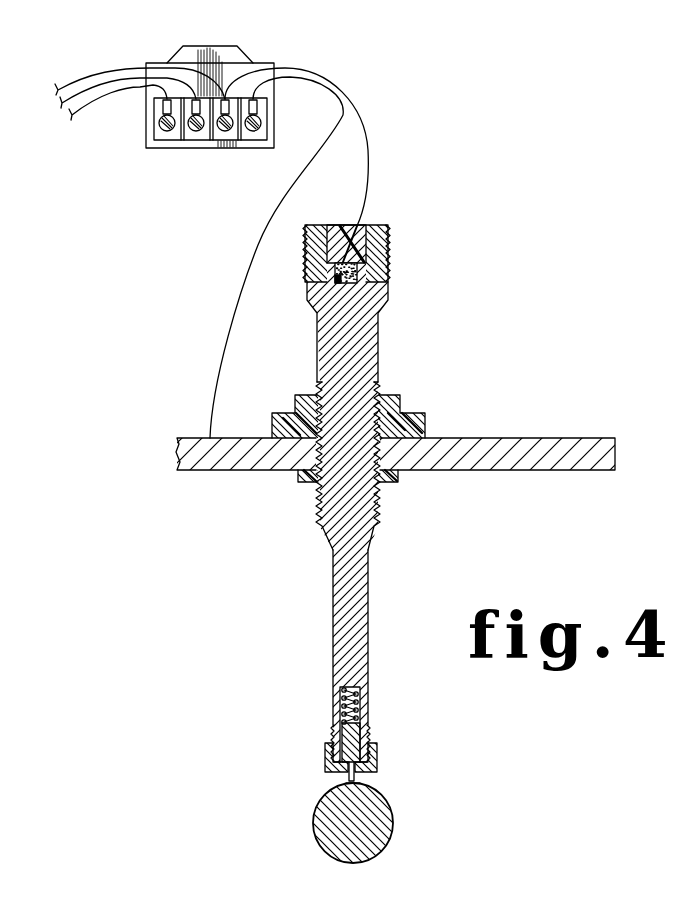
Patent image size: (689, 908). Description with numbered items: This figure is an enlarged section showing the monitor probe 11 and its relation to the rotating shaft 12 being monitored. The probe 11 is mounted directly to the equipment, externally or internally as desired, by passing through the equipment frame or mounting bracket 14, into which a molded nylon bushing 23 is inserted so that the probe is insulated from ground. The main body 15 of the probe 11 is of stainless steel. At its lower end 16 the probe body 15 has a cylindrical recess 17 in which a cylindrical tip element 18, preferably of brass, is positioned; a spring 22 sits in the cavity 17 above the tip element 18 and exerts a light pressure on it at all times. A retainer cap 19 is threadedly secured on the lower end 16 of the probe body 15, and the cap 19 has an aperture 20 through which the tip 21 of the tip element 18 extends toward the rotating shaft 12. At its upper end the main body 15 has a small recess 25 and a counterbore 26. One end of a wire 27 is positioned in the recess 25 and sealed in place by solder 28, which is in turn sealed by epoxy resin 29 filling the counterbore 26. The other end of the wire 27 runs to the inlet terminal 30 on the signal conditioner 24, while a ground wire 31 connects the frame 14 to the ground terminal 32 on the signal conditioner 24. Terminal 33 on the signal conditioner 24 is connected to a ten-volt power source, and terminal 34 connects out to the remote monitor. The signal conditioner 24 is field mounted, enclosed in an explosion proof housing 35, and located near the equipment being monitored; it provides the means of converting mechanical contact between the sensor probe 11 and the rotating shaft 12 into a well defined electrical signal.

The probe 11 is at (425, 351).
The rotating shaft 12 is at (333, 831).
The equipment frame or mounting bracket 14 is at (226, 470).
The main body 15 is at (335, 347).
The lower end 16 is at (333, 608).
The cylindrical recess 17 is at (346, 689).
The cylindrical tip element 18 is at (344, 735).
The retainer cap 19 is at (378, 752).
The aperture 20 is at (348, 776).
The tip 21 is at (358, 779).
The spring 22 is at (361, 702).
The bushing 23 is at (426, 422).
The signal conditioner 24 is at (155, 153).
The small recess 25 is at (336, 280).
The counterbore 26 is at (337, 225).
The wire 27 is at (363, 158).
The solder 28 is at (357, 272).
The epoxy resin 29 is at (366, 242).
The inlet terminal 30 is at (262, 122).
The ground wire 31 is at (225, 357).
The ground terminal 32 is at (225, 131).
The terminal 33 is at (196, 131).
The terminal 34 is at (159, 127).
The explosion proof housing 35 is at (238, 56).